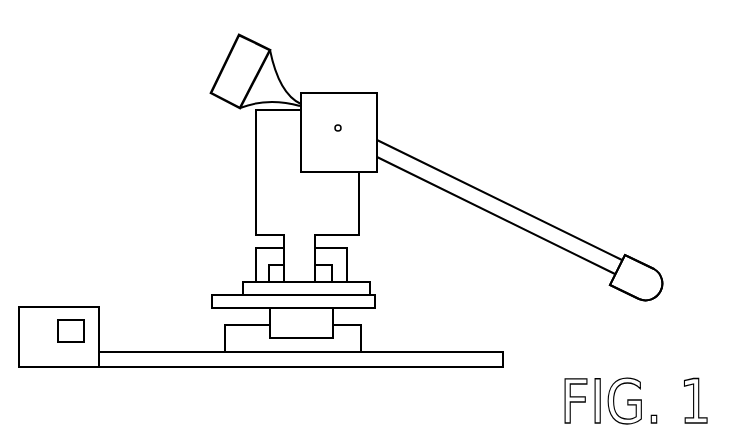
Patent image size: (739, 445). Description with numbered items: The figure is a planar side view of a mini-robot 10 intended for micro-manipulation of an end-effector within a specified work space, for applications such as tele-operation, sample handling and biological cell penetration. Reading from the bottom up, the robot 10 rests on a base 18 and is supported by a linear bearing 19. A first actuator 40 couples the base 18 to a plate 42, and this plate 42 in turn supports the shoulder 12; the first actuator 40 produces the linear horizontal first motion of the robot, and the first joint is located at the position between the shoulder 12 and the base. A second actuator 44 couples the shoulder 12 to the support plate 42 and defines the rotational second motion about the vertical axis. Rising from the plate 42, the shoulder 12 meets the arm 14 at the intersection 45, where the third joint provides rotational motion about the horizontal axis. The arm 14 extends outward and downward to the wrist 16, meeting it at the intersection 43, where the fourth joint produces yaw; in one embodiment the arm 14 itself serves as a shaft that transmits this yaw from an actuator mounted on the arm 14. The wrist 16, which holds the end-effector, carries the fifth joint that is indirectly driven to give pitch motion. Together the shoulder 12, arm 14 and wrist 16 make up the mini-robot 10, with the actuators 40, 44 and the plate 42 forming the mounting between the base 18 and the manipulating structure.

The mini-robot 10 is at (358, 196).
The shoulder 12 is at (396, 198).
The arm 14 is at (509, 177).
The wrist 16 is at (651, 255).
The base 18 is at (467, 352).
The linear bearing 19 is at (225, 335).
The first actuator 40 is at (72, 327).
The plate 42 is at (377, 302).
The intersection of arm and wrist 43 is at (618, 263).
The second actuator 44 is at (267, 272).
The intersection of shoulder and arm 45 is at (341, 126).